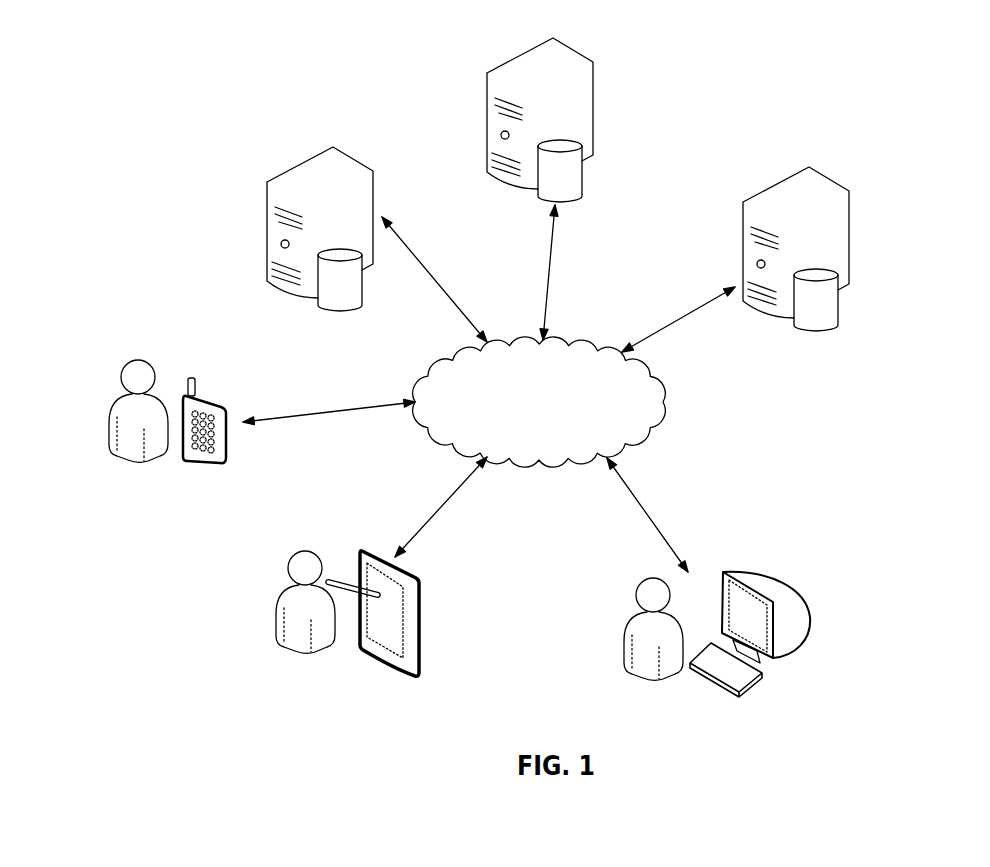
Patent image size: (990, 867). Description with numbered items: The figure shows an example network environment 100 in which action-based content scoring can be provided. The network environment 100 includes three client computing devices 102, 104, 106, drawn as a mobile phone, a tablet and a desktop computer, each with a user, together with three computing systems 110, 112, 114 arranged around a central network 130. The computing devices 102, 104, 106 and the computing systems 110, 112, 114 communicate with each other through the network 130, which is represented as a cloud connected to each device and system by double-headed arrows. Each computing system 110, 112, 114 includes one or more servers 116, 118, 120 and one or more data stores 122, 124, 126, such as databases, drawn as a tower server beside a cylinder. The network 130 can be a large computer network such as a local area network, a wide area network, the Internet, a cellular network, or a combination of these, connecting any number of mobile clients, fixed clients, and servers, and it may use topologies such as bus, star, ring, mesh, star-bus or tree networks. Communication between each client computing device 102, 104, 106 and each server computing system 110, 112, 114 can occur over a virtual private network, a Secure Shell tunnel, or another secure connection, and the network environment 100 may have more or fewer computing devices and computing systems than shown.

The network environment 100 is at (965, 70).
The computing device 102 is at (209, 404).
The computing device 104 is at (411, 576).
The computing device 106 is at (772, 572).
The computing system 110 is at (318, 235).
The computing system 112 is at (544, 127).
The computing system 114 is at (802, 258).
The server 116 is at (345, 154).
The server 118 is at (570, 49).
The server 120 is at (828, 178).
The data store 122 is at (347, 313).
The data store 124 is at (577, 202).
The data store 126 is at (830, 333).
The network 130 is at (523, 412).